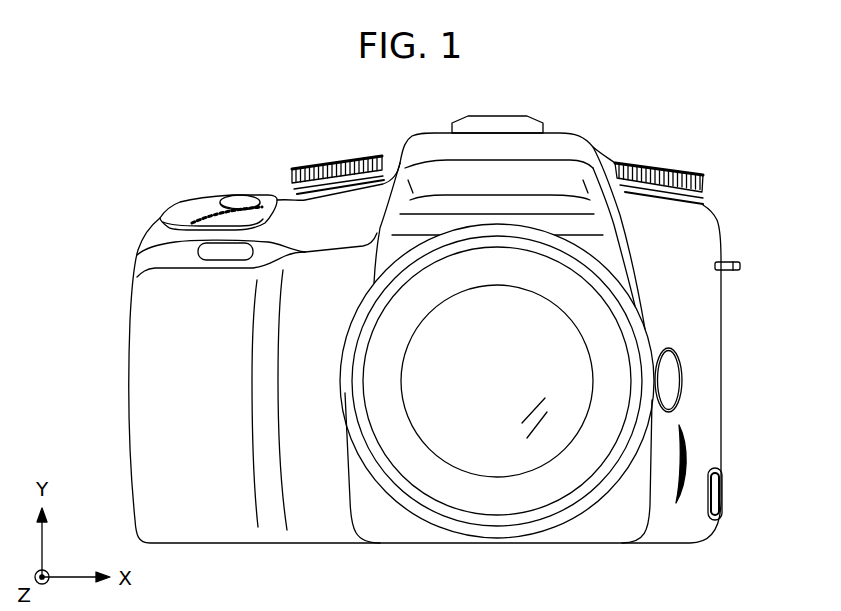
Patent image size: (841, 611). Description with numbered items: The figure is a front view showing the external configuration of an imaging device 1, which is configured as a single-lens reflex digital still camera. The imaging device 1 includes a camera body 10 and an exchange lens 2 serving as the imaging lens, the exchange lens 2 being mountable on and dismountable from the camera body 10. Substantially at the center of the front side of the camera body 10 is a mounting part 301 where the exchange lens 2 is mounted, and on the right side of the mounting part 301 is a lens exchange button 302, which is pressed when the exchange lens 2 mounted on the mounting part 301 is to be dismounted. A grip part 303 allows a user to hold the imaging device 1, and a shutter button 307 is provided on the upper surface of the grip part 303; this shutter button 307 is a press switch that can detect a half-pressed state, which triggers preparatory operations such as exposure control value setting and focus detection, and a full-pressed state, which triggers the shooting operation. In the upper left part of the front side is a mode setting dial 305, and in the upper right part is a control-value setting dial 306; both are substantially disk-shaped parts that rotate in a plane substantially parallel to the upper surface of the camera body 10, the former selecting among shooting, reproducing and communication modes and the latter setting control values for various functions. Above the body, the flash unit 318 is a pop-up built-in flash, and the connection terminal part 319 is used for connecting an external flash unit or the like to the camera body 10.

The imaging device 1 is at (96, 129).
The camera body 10 is at (162, 195).
The exchange lens 2 is at (578, 390).
The mounting part 301 is at (577, 523).
The lens exchange button 302 is at (672, 380).
The grip part 303 is at (147, 427).
The mode setting dial 305 is at (336, 162).
The control-value setting dial 306 is at (658, 168).
The shutter button 307 is at (238, 198).
The flash unit 318 is at (404, 141).
The connection terminal part 319 is at (503, 123).